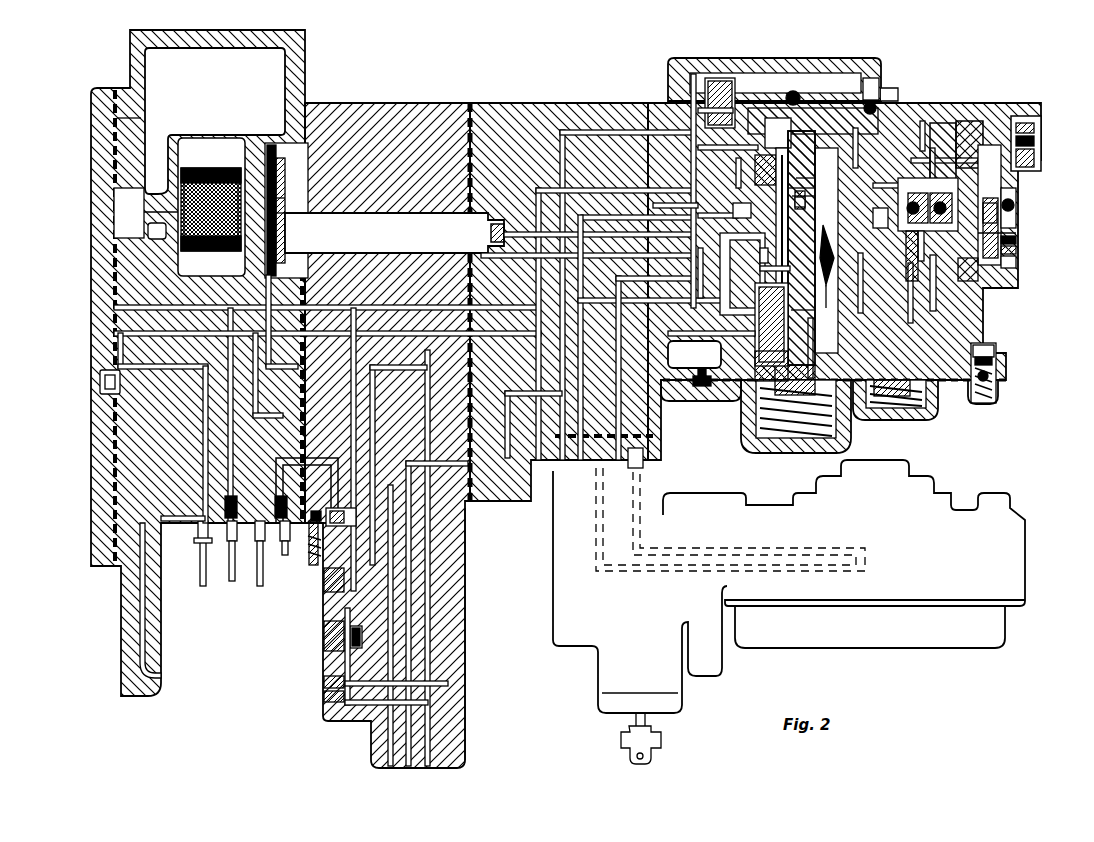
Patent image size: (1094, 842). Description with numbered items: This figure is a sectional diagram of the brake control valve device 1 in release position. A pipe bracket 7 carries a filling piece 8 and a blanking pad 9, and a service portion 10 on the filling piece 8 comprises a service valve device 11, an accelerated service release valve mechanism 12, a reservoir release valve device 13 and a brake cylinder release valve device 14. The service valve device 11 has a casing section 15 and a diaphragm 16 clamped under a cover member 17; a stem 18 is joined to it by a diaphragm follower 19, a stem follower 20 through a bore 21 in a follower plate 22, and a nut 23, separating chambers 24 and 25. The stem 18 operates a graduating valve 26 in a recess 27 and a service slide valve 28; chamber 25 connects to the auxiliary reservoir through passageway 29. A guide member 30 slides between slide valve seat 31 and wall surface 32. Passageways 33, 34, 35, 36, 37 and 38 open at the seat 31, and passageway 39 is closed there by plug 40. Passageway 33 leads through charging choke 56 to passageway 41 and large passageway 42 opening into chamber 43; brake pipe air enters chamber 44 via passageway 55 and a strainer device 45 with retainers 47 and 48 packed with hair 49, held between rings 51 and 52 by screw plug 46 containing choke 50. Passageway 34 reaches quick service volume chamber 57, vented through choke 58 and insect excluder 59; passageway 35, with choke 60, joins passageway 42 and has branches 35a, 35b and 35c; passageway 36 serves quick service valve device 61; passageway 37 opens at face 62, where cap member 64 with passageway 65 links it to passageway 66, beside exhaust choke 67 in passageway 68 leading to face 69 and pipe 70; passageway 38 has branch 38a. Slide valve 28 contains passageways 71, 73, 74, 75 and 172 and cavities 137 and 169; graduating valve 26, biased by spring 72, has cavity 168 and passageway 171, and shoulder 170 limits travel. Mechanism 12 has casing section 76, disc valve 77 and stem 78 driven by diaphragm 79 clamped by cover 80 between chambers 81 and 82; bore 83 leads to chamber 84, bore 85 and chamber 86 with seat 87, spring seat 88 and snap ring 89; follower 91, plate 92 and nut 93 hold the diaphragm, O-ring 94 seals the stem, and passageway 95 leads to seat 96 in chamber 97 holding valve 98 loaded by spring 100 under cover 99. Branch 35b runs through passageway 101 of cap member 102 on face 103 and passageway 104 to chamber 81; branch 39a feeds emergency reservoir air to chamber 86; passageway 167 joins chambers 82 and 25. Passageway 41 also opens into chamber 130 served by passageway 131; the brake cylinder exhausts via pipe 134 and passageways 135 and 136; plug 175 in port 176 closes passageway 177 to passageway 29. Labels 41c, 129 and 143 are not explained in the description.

The brake control valve device 1 is at (404, 94).
The pipe bracket 7 is at (128, 55).
The filling piece 8 is at (355, 94).
The blanking pad 9 is at (95, 247).
The service portion 10 is at (528, 94).
The service valve device 11 is at (692, 50).
The accelerated service release valve mechanism 12 is at (969, 127).
The manually operative reservoir release valve device 13 is at (583, 668).
The brake cylinder release valve device 14 is at (942, 643).
The casing section 15 is at (592, 96).
The diaphragm 16 is at (868, 80).
The cover member 17 is at (824, 56).
The service piston stem 18 is at (889, 114).
The diaphragm follower 19 is at (700, 108).
The stem follower 20 is at (802, 152).
The bore 21 is at (780, 132).
The diaphragm follower plate 22 is at (730, 65).
The nut 23 is at (788, 68).
The chamber 24 is at (866, 70).
The chamber 25 is at (873, 100).
The graduating valve 26 is at (790, 188).
The recess 27 is at (790, 201).
The service slide valve 28 is at (805, 333).
The passageway 29 is at (564, 96).
The guide member 30 is at (804, 168).
The service slide valve seat 31 is at (740, 347).
The wall surface 32 is at (795, 216).
The passageway 33 is at (362, 378).
The passageway 34 is at (742, 231).
The passageway 35 is at (516, 220).
The first branch passageway 35a is at (682, 72).
The second branch passageway 35b is at (700, 140).
The third branch passageway 35c is at (903, 139).
The passageway 36 is at (864, 244).
The passageway 37 is at (406, 445).
The passageway 38 is at (742, 325).
The branch passageway 38a is at (625, 282).
The passageway 39 is at (300, 332).
The branch passageway 39a is at (690, 170).
The plug 40 is at (750, 206).
The passageway 41 is at (343, 372).
The passage 41c is at (336, 658).
The large passageway 42 is at (366, 210).
The chamber 43 is at (288, 233).
The chamber 44 is at (200, 152).
The strainer device 45 is at (220, 158).
The screw plug 46 is at (260, 140).
The perforated tubular retainer 47 is at (272, 203).
The perforated tubular retainer 48 is at (207, 242).
The hair 49 is at (200, 158).
The choke 50 is at (272, 190).
The annular ring 51 is at (170, 235).
The ring 52 is at (272, 176).
The passageway 55 is at (133, 487).
The auxiliary reservoir charging choke 56 is at (316, 618).
The quick service volume chamber 57 is at (664, 381).
The choke 58 is at (696, 361).
The insect excluder device 59 is at (706, 379).
The choke 60 is at (482, 222).
The quick service valve device 61 is at (924, 406).
The face 62 is at (322, 632).
The cap member 64 is at (304, 550).
The passageway 65 is at (302, 554).
The passageway 66 is at (326, 600).
The brake cylinder exhaust choke 67 is at (306, 514).
The passageway 68 is at (330, 455).
The face 69 is at (188, 512).
The pipe 70 is at (248, 577).
The first passageway 71 is at (770, 292).
The spring 72 is at (865, 212).
The second passageway 73 is at (755, 172).
The third passageway 74 is at (775, 259).
The fourth passageway 75 is at (805, 302).
The casing section 76 is at (950, 100).
The flat disc type valve 77 is at (925, 220).
The valve operating stem 78 is at (935, 192).
The diaphragm 79 is at (1006, 254).
The clamping cover 80 is at (1000, 268).
The chamber 81 is at (998, 185).
The chamber 82 is at (972, 274).
The bore 83 is at (1005, 190).
The first chamber 84 is at (1005, 219).
The coaxial bore 85 is at (925, 170).
The second chamber 86 is at (900, 228).
The annular valve seat 87 is at (930, 235).
The spring seat 88 is at (892, 214).
The snap ring 89 is at (890, 188).
The diaphragm follower 91 is at (1008, 241).
The diaphragm follower plate 92 is at (1008, 230).
The nut 93 is at (1005, 200).
The O-ring 94 is at (1040, 208).
The passageway 95 is at (930, 290).
The annular valve seat 96 is at (989, 340).
The chamber 97 is at (990, 368).
The flat disc-type valve 98 is at (990, 355).
The cover member 99 is at (976, 386).
The spring 100 is at (988, 385).
The passageway 101 is at (1020, 126).
The cap member 102 is at (1020, 144).
The face 103 is at (1014, 104).
The passageway 104 is at (1020, 162).
The passage 129 is at (415, 340).
The chamber 130 is at (318, 645).
The passageway 131 is at (352, 714).
The pipe 134 is at (194, 353).
The passageway 135 is at (92, 375).
The passageway 136 is at (186, 345).
The cavity 137 is at (805, 318).
The passage 143 is at (282, 421).
The passageway 167 is at (918, 150).
The cavity 168 is at (815, 262).
The cavity 169 is at (700, 290).
The shoulder 170 is at (734, 171).
The passageway 171 is at (808, 191).
The passageway 172 is at (772, 246).
The screw-threaded plug 175 is at (316, 700).
The screw-threaded port 176 is at (316, 690).
The passageway 177 is at (432, 655).